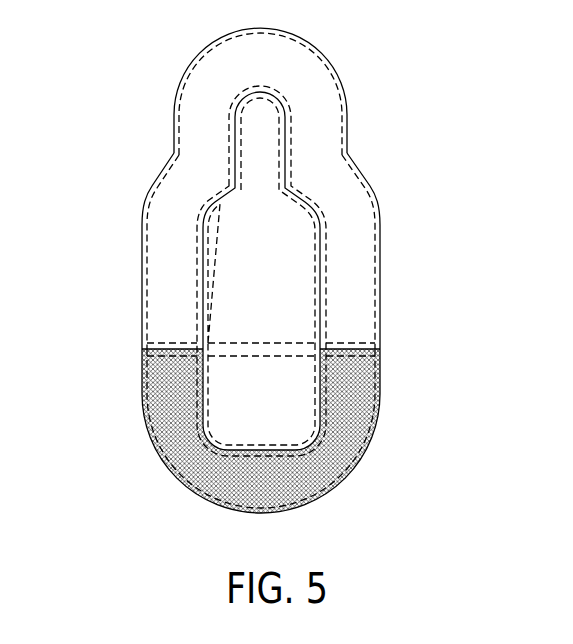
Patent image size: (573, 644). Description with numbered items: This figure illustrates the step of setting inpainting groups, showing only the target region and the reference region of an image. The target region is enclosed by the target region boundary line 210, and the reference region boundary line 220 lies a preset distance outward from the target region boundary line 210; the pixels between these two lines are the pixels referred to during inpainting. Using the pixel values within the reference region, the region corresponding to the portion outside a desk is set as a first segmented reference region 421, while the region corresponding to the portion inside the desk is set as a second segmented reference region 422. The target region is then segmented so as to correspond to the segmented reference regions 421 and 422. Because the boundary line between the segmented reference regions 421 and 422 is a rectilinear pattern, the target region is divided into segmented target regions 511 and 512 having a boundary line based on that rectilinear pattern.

The reference region boundary line 220 is at (347, 123).
The first segmented reference region 421 is at (380, 237).
The second segmented reference region 422 is at (380, 390).
The target region boundary line 210 is at (320, 293).
The segmented target region 511 is at (207, 285).
The segmented target region 512 is at (207, 397).